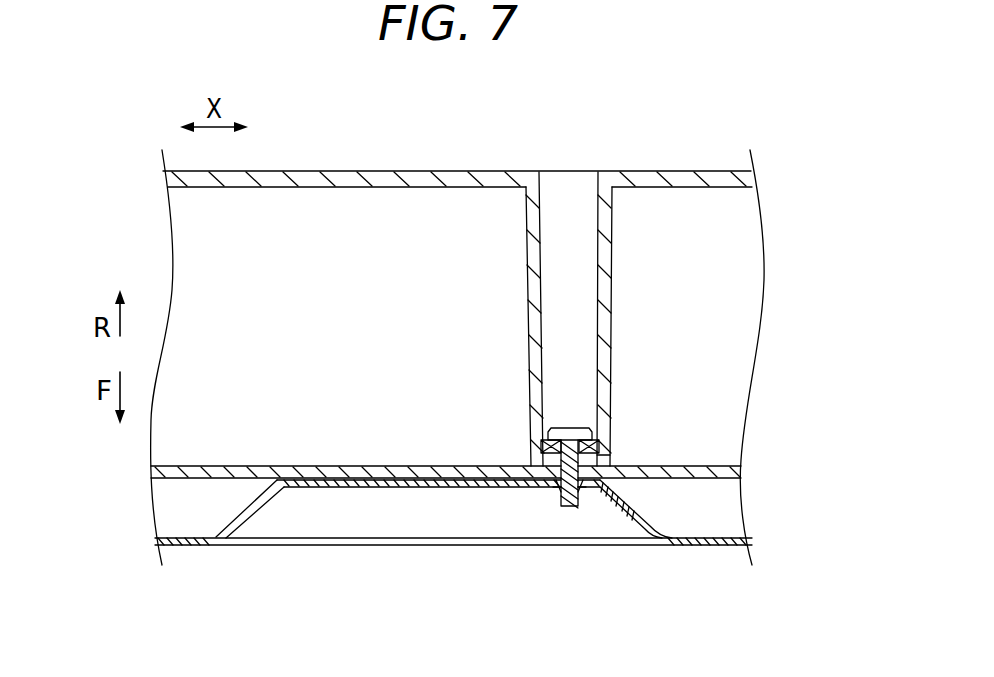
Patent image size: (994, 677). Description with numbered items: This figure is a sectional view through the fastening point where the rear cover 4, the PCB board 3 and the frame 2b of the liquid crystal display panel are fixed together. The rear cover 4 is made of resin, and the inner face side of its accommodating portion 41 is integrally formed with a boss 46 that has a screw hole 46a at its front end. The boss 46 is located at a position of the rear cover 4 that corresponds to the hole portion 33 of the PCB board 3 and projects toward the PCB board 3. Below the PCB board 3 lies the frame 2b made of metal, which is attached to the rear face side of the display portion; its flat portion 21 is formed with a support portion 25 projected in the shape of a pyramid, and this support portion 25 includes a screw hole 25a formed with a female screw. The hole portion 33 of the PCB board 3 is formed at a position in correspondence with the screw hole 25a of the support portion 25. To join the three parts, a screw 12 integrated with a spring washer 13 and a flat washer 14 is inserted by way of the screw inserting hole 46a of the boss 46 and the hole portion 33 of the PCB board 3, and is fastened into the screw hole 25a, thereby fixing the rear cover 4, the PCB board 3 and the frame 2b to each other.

The rear cover 4 is at (692, 158).
The accommodating portion 41 is at (346, 171).
The boss 46 is at (611, 282).
The screw hole 46a is at (603, 461).
The screw 12 is at (558, 427).
The spring washer 13 is at (585, 427).
The flat washer 14 is at (594, 445).
The PCB board 3 is at (716, 459).
The support portion 25 is at (275, 486).
The screw hole 25a is at (553, 488).
The hole portion 33 is at (527, 488).
The flat portion 21 is at (180, 538).
The frame 2b is at (441, 514).